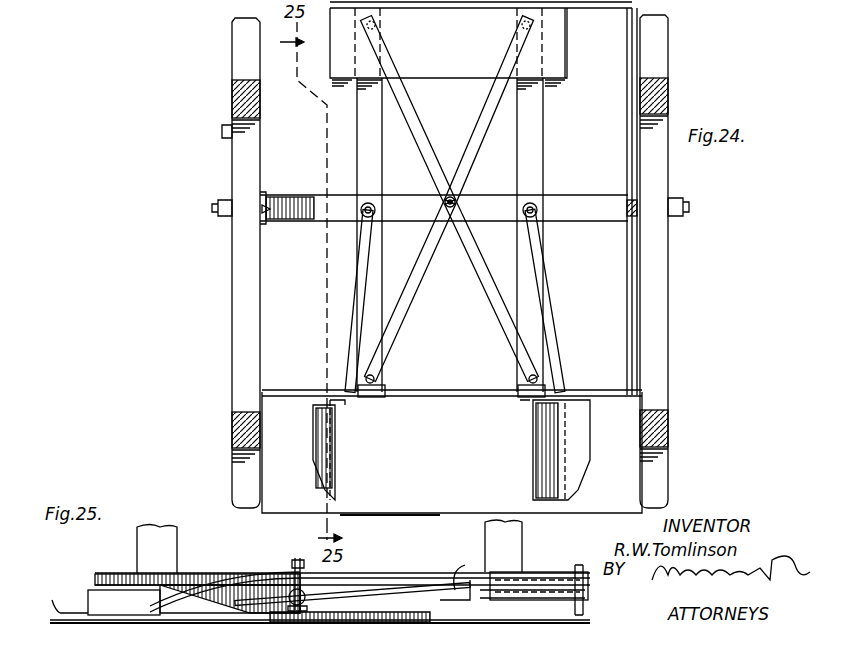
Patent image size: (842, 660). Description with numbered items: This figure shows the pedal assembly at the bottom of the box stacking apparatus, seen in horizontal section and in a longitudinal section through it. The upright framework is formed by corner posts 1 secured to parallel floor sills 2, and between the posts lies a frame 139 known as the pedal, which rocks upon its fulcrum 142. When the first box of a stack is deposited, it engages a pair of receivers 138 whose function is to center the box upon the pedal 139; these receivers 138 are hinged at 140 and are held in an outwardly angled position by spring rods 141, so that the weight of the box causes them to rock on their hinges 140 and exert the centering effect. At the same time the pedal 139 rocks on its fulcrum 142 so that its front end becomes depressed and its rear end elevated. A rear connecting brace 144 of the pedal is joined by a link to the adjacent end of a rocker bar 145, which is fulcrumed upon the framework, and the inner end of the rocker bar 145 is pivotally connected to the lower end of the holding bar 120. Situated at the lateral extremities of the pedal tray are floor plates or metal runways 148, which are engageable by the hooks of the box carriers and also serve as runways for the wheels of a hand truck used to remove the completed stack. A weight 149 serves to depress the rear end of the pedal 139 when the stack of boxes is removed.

In FIG. 24, the corner post 1 is at (232, 98).
In FIG. 24, the floor sill 2 is at (245, 373).
In FIG. 24, the holding bar 120 is at (635, 240).
In FIG. 24, the receiver 138 is at (345, 450).
In FIG. 25, the receiver 138 is at (575, 585).
In FIG. 24, the pedal 139 is at (545, 152).
In FIG. 25, the pedal 139 is at (237, 613).
In FIG. 24, the hinge 140 is at (338, 425).
In FIG. 25, the hinge 140 is at (500, 590).
In FIG. 24, the spring rod 141 is at (347, 352).
In FIG. 25, the spring rod 141 is at (433, 585).
In FIG. 24, the fulcrum 142 is at (272, 200).
In FIG. 25, the fulcrum 142 is at (297, 560).
In FIG. 24, the rear connecting brace 144 is at (598, 14).
In FIG. 25, the rear connecting brace 144 is at (85, 600).
In FIG. 24, the rocker bar 145 is at (635, 100).
In FIG. 24, the floor plate 148 is at (620, 491).
In FIG. 25, the floor plate 148 is at (326, 574).
In FIG. 24, the weight 149 is at (468, 62).
In FIG. 25, the weight 149 is at (112, 600).